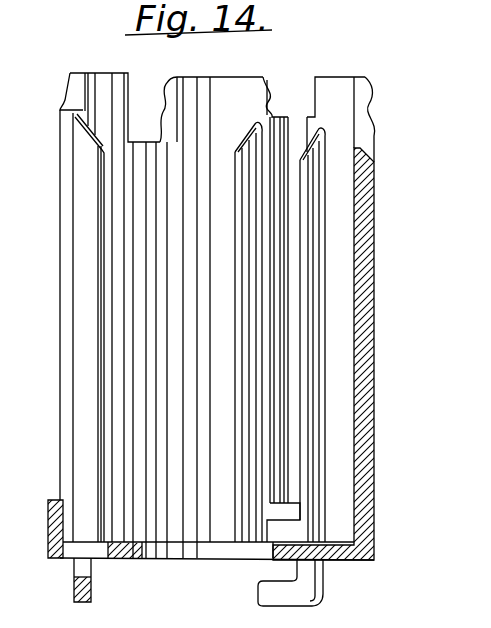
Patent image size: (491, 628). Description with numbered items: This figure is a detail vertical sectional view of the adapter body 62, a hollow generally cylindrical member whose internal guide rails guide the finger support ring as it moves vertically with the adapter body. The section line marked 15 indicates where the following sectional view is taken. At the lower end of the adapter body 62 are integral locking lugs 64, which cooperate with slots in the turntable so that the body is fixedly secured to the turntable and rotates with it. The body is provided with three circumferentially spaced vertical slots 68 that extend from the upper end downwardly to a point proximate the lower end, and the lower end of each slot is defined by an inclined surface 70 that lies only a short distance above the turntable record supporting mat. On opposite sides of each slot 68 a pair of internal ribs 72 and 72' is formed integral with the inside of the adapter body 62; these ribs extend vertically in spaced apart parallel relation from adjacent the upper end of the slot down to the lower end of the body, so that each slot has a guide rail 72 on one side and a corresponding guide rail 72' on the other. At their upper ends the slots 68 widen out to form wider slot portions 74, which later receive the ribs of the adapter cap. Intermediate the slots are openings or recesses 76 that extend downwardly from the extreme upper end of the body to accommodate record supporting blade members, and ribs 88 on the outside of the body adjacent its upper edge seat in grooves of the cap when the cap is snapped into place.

The section line for FIG. 15 is at (75, 63).
The adapter body 62 is at (376, 316).
The locking lugs 64 is at (92, 590).
The vertical slots 68 is at (62, 266).
The inclined surfaces 70 is at (63, 508).
The internal rib 72 is at (226, 332).
The internal rib 72' is at (213, 328).
The wider slot portions 74 is at (80, 78).
The openings or recesses 76 is at (160, 92).
The ribs 88 is at (66, 94).